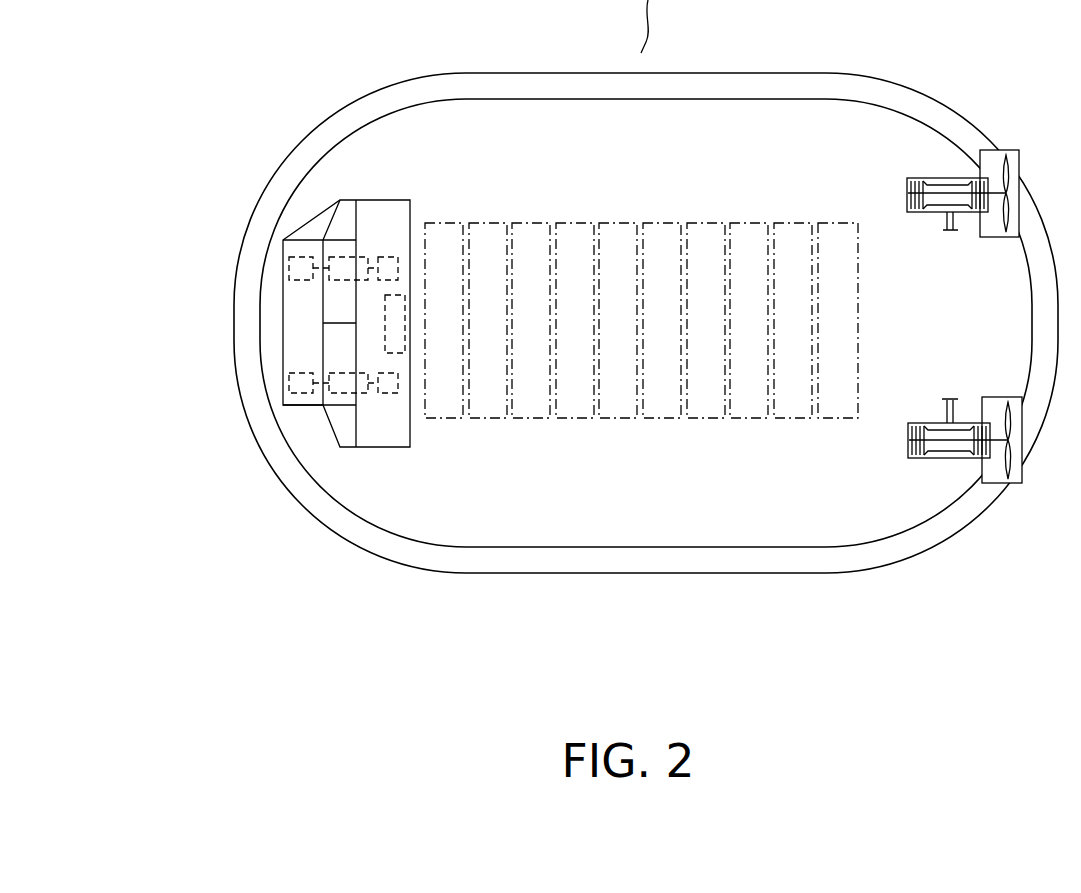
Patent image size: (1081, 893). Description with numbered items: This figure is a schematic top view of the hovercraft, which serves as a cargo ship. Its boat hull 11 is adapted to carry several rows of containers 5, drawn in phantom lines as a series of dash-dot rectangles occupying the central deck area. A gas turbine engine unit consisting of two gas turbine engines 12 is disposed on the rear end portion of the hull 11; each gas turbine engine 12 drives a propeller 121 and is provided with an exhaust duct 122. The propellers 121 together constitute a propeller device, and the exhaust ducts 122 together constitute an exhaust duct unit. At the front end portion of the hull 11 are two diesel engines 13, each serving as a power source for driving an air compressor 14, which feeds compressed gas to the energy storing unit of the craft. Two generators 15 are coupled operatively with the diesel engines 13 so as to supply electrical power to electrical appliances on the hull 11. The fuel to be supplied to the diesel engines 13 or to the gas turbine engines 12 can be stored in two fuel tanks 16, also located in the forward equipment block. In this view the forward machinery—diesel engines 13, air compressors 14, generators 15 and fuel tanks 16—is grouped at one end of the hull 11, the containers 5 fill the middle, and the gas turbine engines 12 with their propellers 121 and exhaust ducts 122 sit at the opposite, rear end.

The containers 5 is at (670, 222).
The boat hull 11 is at (363, 150).
The gas turbine engine 12 is at (942, 177).
The propeller 121 is at (998, 150).
The exhaust duct 122 is at (942, 220).
The diesel engine 13 is at (343, 395).
The air compressor 14 is at (388, 393).
The generator 15 is at (282, 405).
The fuel tank 16 is at (387, 332).